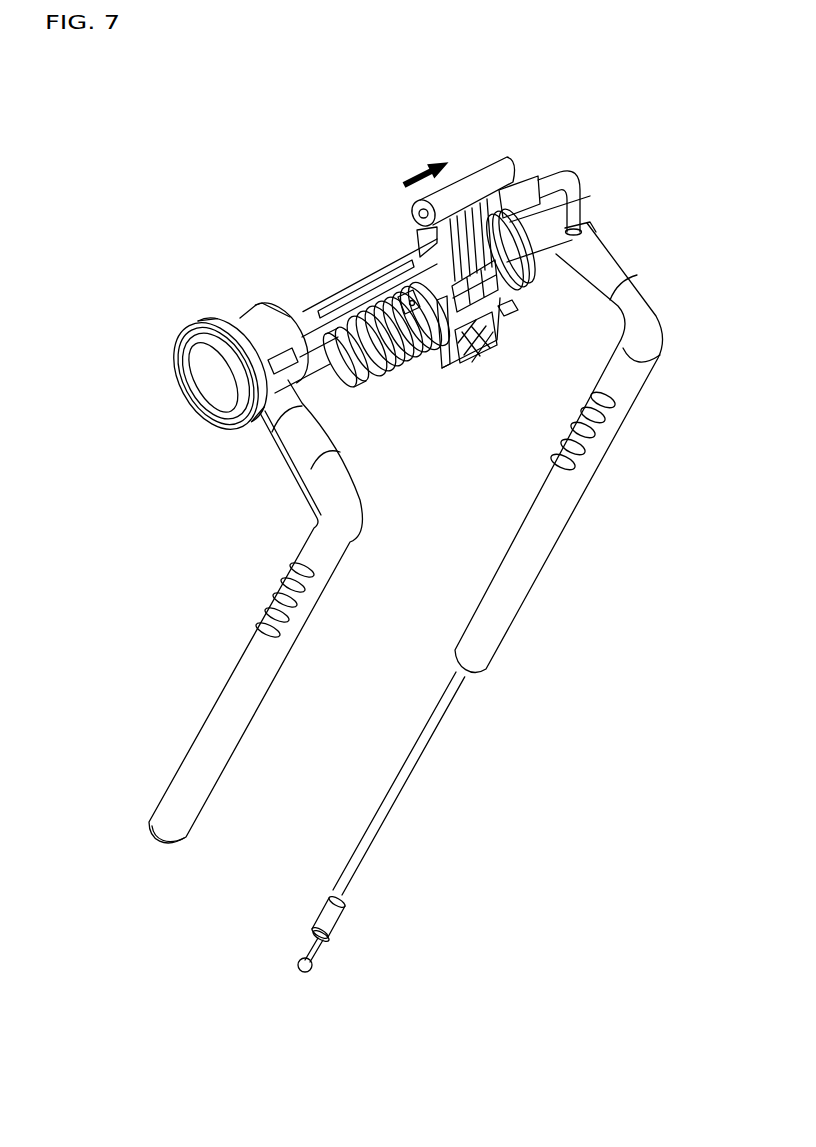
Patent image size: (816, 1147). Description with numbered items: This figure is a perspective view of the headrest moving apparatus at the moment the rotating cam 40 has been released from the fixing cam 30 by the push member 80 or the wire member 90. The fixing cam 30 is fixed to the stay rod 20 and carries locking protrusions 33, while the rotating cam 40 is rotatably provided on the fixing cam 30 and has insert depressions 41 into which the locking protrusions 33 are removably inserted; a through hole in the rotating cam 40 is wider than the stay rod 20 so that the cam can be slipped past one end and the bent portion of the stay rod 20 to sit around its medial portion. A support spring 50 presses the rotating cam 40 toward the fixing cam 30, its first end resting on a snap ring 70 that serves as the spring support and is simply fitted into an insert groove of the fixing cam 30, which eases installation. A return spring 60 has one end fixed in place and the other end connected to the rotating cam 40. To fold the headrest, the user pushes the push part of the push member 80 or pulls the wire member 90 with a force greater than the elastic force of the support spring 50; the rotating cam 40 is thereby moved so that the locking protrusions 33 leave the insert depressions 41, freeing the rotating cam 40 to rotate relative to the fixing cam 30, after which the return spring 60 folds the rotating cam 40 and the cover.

The stay rod 20 is at (216, 647).
The fixing cam 30 is at (367, 401).
The locking protrusions 33 is at (441, 366).
The rotating cam 40 is at (489, 140).
The insert depressions 41 is at (478, 347).
The support spring 50 is at (514, 322).
The return spring 60 is at (392, 395).
The snap ring 70 is at (531, 264).
The push member 80 is at (288, 301).
The wire member 90 is at (536, 160).